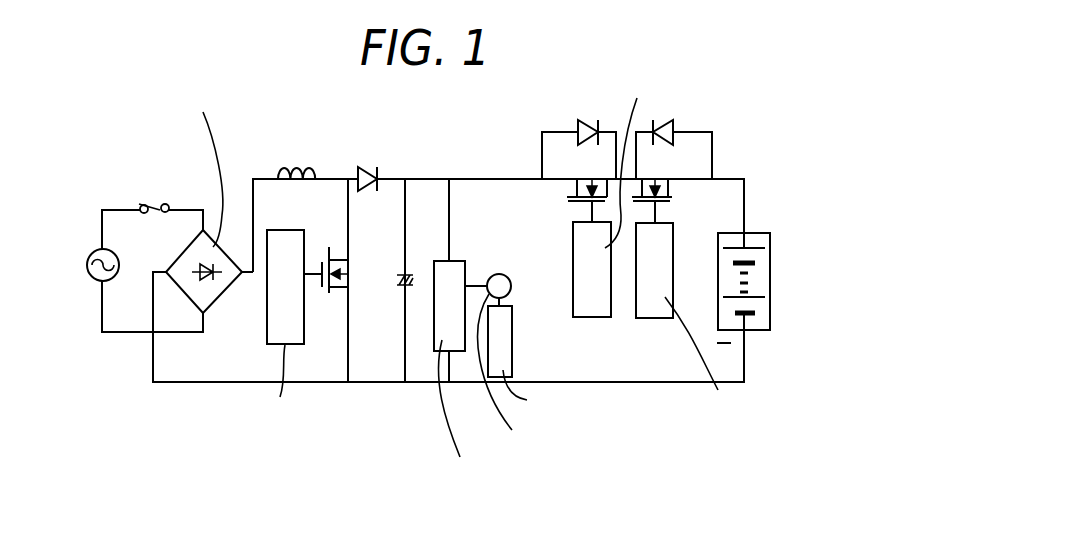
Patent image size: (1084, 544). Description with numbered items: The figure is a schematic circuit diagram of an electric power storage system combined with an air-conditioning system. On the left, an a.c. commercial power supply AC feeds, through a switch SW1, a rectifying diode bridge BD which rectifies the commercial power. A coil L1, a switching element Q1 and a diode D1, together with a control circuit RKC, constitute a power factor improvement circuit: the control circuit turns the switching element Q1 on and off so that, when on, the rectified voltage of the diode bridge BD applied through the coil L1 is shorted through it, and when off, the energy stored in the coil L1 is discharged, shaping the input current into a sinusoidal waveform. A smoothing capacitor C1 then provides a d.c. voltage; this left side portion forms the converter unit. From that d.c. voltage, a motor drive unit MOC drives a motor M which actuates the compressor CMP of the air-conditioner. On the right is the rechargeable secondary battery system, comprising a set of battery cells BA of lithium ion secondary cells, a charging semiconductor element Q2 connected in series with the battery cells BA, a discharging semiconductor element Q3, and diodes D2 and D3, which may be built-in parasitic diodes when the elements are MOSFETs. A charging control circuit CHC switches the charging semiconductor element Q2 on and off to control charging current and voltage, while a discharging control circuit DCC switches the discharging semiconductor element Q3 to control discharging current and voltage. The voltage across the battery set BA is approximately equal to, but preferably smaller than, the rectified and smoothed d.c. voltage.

The a.c. commercial power supply AC is at (90, 253).
The switch SW1 is at (162, 202).
The rectifying diode bridge BD is at (185, 250).
The control circuit RKC is at (262, 305).
The switching element Q1 is at (331, 296).
The coil L1 is at (295, 170).
The diode D1 is at (382, 174).
The smoothing capacitor C1 is at (396, 287).
The motor drive unit MOC is at (478, 243).
The motor M is at (510, 276).
The compressor CMP is at (513, 350).
The diode D3 is at (576, 125).
The diode D2 is at (678, 125).
The discharging semiconductor element Q3 is at (572, 201).
The charging semiconductor element Q2 is at (668, 204).
The discharging control circuit DCC is at (571, 278).
The charging control circuit CHC is at (652, 319).
The set of battery cells BA is at (771, 285).